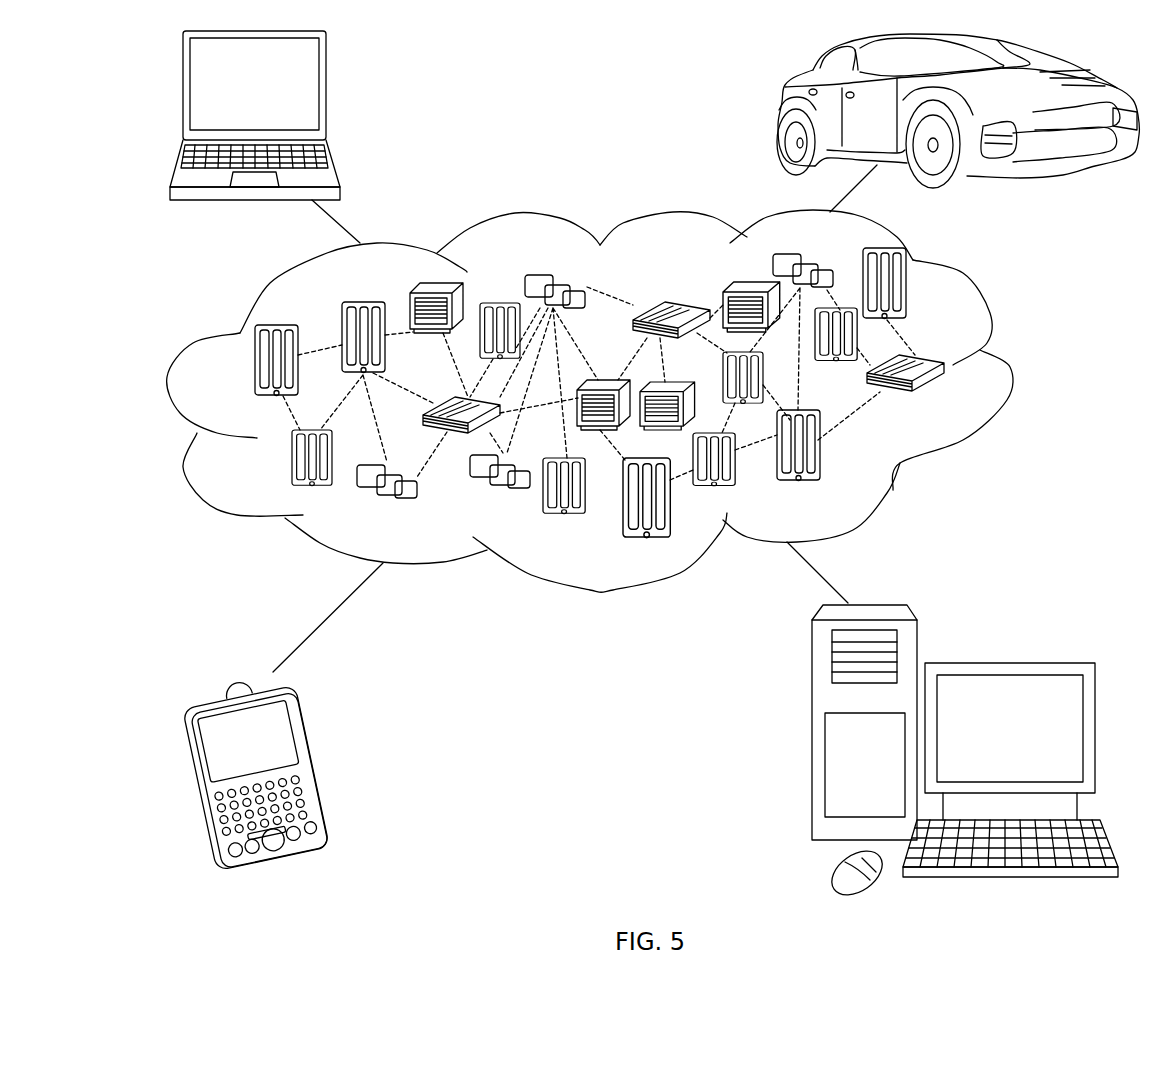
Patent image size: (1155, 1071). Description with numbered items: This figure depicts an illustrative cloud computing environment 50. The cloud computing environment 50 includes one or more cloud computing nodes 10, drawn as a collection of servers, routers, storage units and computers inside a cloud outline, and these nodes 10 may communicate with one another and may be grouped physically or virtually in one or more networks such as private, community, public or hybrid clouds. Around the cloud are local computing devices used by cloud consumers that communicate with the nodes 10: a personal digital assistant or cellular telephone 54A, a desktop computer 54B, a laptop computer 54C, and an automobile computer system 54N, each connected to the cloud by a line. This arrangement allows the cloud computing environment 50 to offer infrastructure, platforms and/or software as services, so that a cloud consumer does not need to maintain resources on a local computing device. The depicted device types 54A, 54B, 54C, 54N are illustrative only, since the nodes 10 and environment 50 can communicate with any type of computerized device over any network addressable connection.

The cloud computing environment 50 is at (1013, 370).
The cloud computing nodes 10 is at (947, 402).
The personal digital assistant or cellular telephone 54A is at (316, 760).
The desktop computer 54B is at (1005, 663).
The laptop computer 54C is at (329, 95).
The automobile computer system 54N is at (780, 108).